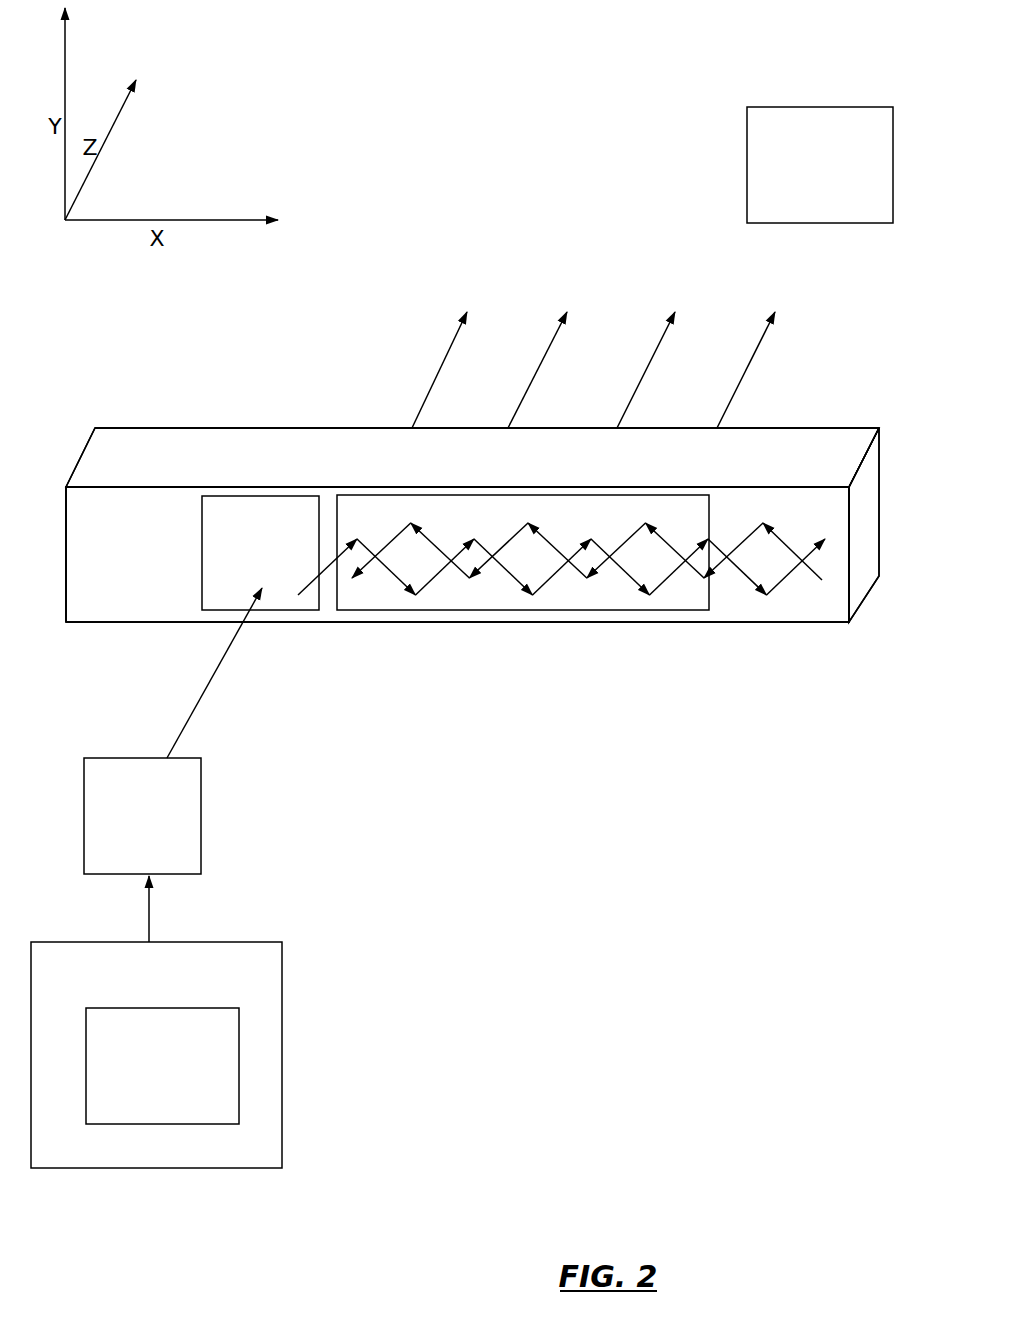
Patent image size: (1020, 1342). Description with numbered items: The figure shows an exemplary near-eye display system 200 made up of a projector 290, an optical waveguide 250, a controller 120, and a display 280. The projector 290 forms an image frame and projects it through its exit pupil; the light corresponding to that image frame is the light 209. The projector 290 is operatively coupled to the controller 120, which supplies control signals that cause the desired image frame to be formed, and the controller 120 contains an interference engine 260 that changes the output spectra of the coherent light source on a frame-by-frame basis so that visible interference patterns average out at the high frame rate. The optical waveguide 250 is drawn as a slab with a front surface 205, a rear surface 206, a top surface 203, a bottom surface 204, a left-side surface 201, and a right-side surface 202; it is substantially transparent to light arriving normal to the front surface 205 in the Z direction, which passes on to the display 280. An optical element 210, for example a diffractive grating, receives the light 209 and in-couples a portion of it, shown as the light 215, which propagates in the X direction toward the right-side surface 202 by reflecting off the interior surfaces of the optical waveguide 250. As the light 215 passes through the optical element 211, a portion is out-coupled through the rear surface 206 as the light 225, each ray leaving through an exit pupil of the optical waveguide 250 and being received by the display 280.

The near-eye display system 200 is at (627, 1172).
The left-side surface 201 is at (66, 486).
The right-side surface 202 is at (872, 457).
The top surface 203 is at (264, 448).
The bottom surface 204 is at (653, 623).
The front surface 205 is at (122, 590).
The rear surface 206 is at (179, 427).
The light 209 is at (193, 722).
The optical element 210 is at (260, 553).
The optical element 211 is at (523, 552).
The light 215 is at (446, 563).
The light 225 is at (417, 328).
The optical waveguide 250 is at (472, 545).
The display 280 is at (820, 165).
The projector 290 is at (142, 816).
The controller 120 is at (156, 1022).
The interference engine 260 is at (162, 1066).